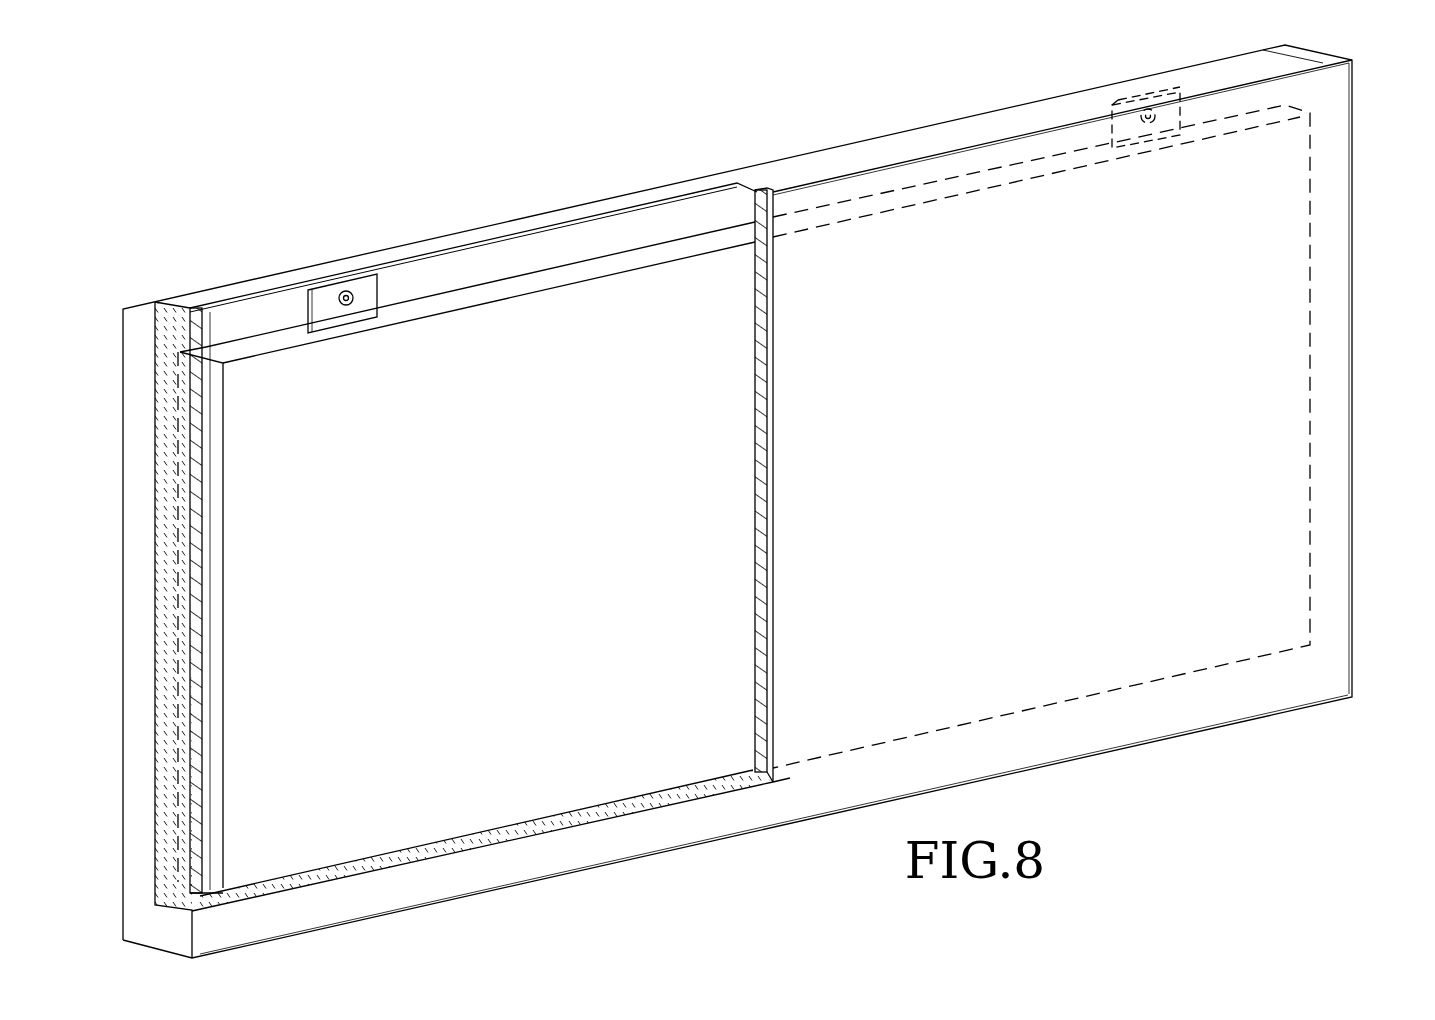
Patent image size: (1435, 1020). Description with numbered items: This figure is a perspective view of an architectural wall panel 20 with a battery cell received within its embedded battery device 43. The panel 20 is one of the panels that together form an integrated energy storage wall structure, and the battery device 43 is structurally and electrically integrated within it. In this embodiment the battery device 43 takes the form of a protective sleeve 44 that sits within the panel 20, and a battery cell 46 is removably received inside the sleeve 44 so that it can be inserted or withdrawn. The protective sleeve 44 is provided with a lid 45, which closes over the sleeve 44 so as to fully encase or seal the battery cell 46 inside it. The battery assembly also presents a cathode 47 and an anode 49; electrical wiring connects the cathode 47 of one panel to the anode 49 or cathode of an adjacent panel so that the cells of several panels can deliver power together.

The architectural wall panel 20 is at (1352, 285).
The battery device 43 is at (624, 240).
The protective sleeve 44 is at (207, 327).
The lid 45 is at (966, 123).
The battery cell 46 is at (458, 300).
The cathode 47 is at (346, 288).
The anode 49 is at (1142, 100).